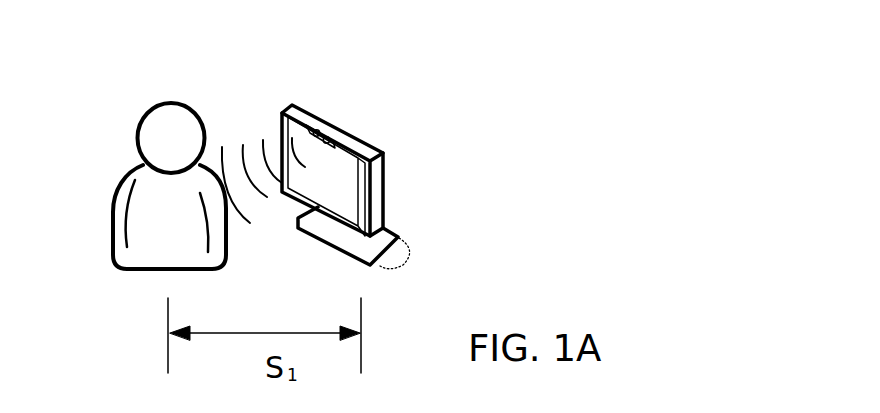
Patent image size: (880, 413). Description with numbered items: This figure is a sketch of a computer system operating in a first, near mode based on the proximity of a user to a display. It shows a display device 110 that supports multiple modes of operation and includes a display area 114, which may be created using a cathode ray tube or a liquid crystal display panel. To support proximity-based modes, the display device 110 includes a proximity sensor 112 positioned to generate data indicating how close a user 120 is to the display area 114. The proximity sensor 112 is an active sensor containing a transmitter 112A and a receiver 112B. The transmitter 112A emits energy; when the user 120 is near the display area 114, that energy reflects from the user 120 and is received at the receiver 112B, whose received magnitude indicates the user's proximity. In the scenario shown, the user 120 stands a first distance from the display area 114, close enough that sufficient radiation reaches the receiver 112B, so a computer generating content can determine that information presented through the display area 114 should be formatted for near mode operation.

The display device 110 is at (385, 176).
The proximity sensor 112 is at (325, 126).
The transmitter 112A is at (314, 129).
The receiver 112B is at (338, 130).
The display area 114 is at (353, 217).
The user 120 is at (140, 117).